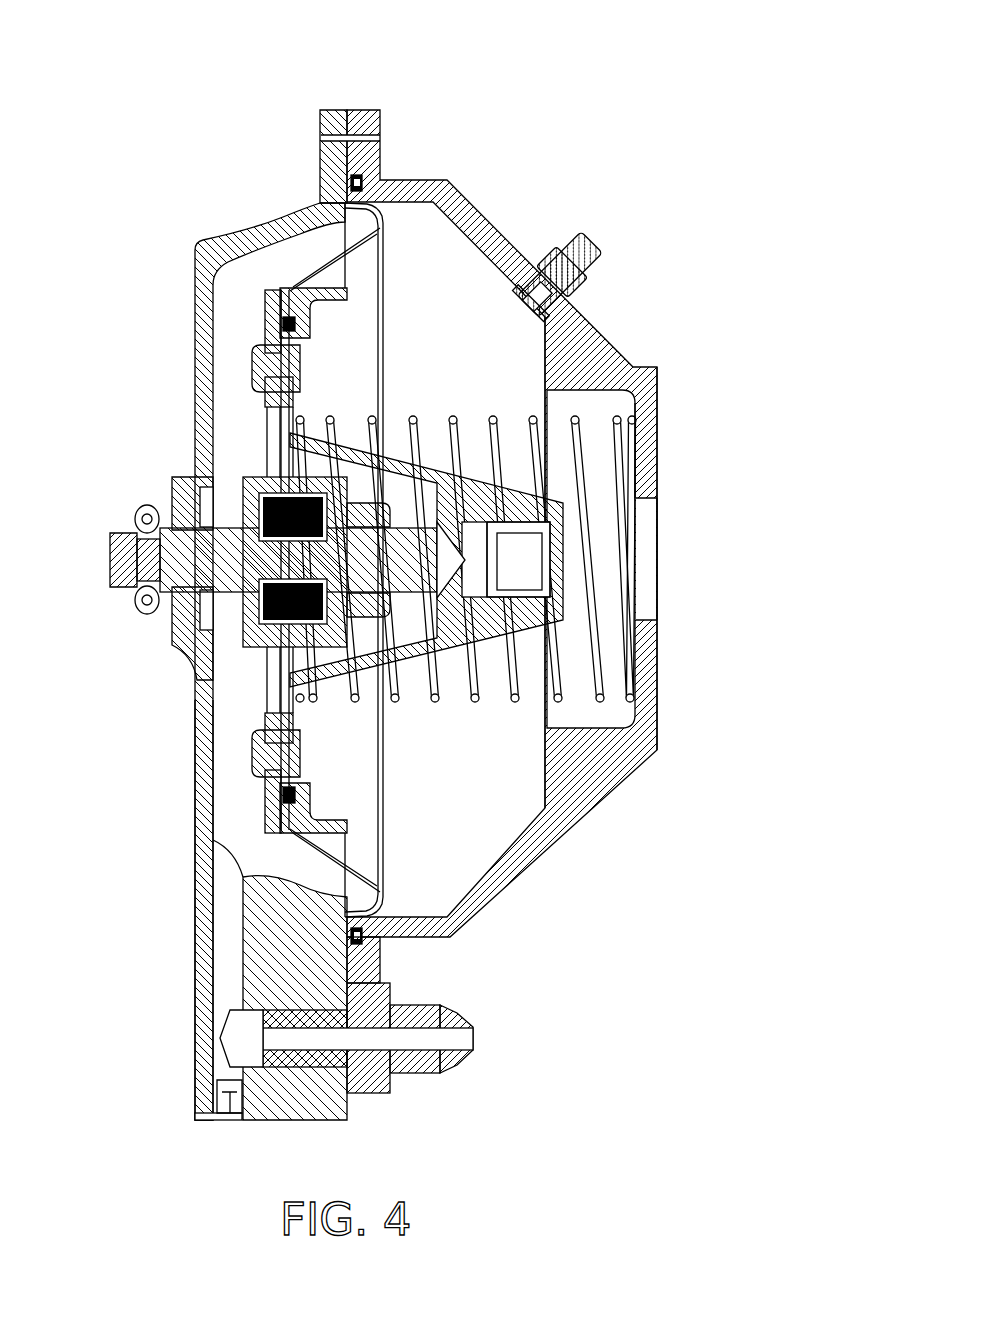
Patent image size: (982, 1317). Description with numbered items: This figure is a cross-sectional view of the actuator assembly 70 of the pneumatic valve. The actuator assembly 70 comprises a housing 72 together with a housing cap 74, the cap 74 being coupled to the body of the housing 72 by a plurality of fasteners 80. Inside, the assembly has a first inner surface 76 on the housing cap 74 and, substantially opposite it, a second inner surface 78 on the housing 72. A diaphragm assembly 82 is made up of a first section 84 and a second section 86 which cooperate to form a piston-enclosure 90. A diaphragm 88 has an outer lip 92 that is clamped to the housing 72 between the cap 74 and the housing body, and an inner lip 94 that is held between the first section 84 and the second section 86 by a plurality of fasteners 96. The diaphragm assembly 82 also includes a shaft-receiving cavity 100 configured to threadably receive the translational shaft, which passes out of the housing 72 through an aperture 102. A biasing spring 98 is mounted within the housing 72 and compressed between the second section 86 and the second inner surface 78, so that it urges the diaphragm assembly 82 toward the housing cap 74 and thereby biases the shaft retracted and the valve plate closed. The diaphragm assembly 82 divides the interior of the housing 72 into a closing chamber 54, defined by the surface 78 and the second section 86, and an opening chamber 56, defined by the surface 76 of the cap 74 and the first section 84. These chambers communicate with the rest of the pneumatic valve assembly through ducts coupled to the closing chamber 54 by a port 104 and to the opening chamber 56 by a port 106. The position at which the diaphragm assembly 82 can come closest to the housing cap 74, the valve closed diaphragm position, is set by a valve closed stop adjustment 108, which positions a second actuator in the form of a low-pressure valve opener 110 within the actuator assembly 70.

The closing chamber 54 is at (448, 278).
The opening chamber 56 is at (228, 308).
The actuator assembly 70 is at (610, 135).
The housing 72 is at (482, 218).
The housing cap 74 is at (212, 802).
The first inner surface 76 is at (210, 683).
The second inner surface 78 is at (638, 466).
The fasteners 80 is at (320, 140).
The diaphragm assembly 82 is at (390, 448).
The first section 84 is at (257, 818).
The second section 86 is at (297, 398).
The diaphragm 88 is at (374, 318).
The piston-enclosure 90 is at (407, 625).
The outer lip 92 is at (364, 170).
The inner lip 94 is at (292, 796).
The fasteners 96 is at (255, 370).
The biasing spring 98 is at (545, 418).
The shaft-receiving cavity 100 is at (530, 572).
The aperture 102 is at (645, 531).
The port 104 is at (597, 282).
The port 106 is at (235, 952).
The valve closed stop adjustment 108 is at (172, 578).
The low-pressure valve opener 110 is at (232, 487).